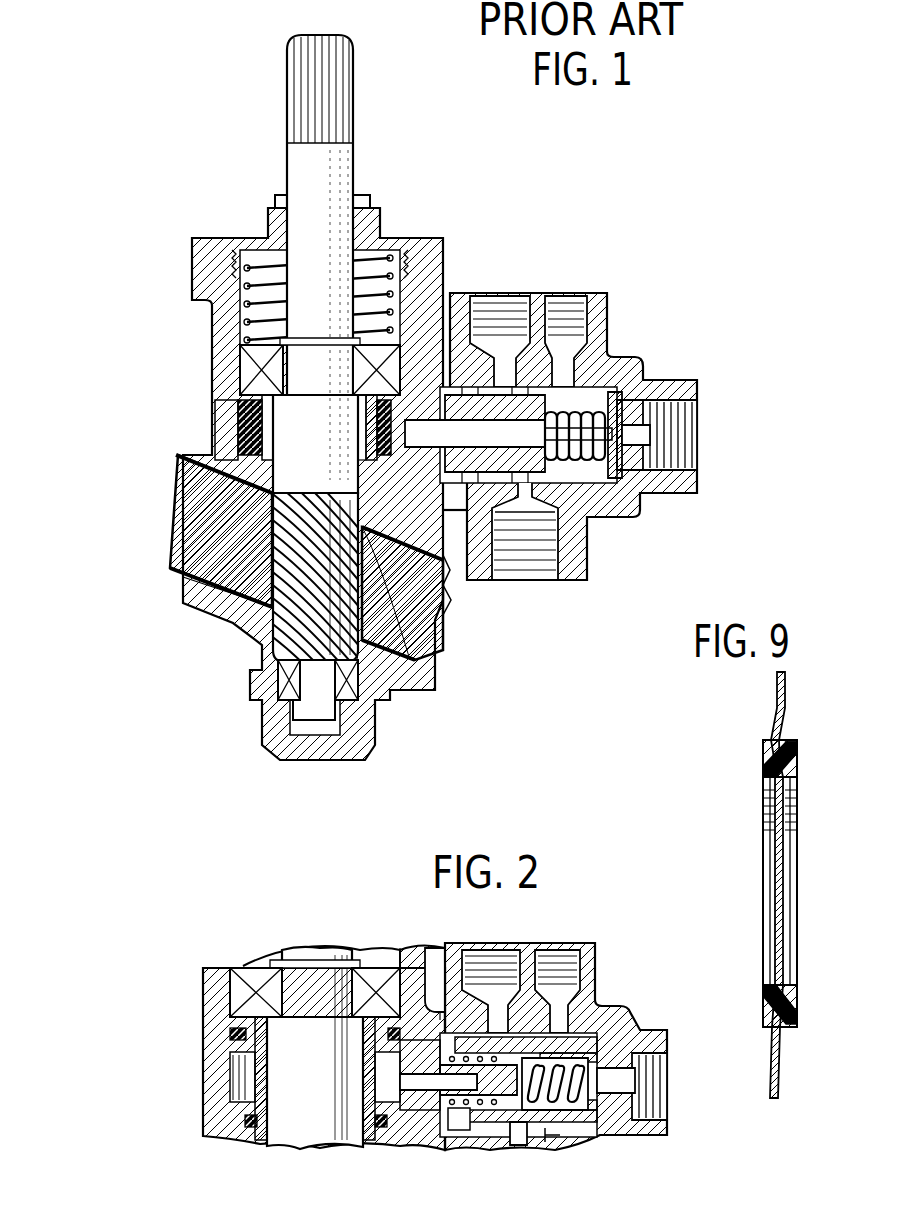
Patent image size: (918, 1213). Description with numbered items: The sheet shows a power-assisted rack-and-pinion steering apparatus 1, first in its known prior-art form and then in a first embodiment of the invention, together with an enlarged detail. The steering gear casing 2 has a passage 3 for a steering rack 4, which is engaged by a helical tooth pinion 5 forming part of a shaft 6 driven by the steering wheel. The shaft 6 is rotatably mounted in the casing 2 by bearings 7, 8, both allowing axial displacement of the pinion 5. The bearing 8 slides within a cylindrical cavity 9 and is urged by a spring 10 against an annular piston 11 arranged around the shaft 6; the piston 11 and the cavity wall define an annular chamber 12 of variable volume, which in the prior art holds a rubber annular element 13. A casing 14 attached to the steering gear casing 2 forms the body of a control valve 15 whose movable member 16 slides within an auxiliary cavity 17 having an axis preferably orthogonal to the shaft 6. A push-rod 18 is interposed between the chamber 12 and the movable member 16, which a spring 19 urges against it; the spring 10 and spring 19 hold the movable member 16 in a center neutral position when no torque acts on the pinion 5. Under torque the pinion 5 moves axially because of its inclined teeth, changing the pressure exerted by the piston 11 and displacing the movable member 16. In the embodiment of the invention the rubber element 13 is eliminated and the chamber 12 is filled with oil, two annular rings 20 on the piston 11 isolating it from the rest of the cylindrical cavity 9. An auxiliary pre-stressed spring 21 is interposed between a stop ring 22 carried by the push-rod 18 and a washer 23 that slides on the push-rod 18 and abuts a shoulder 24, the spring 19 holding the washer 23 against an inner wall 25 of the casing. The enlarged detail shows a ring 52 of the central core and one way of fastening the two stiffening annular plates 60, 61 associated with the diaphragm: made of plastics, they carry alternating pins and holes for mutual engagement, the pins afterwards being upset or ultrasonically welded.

In FIG. 1, the power-assisted rack-and-pinion steering apparatus 1 is at (512, 278).
In FIG. 2, the power-assisted rack-and-pinion steering apparatus 1 is at (196, 1036).
In FIG. 1, the steering gear casing 2 is at (200, 245).
In FIG. 2, the steering gear casing 2 is at (208, 982).
In FIG. 1, the passage 3 is at (420, 570).
In FIG. 1, the steering rack 4 is at (182, 563).
In FIG. 1, the rack-engaging helical tooth pinion 5 is at (300, 605).
In FIG. 1, the shaft 6 is at (330, 172).
In FIG. 2, the shaft 6 is at (300, 950).
In FIG. 1, the bearing 7 is at (278, 676).
In FIG. 1, the bearing 8 is at (248, 368).
In FIG. 2, the bearing 8 is at (248, 978).
In FIG. 1, the cylindrical cavity 9 is at (252, 298).
In FIG. 2, the cylindrical cavity 9 is at (388, 950).
In FIG. 1, the spring 10 is at (405, 300).
In FIG. 1, the annular piston 11 is at (240, 448).
In FIG. 2, the annular piston 11 is at (248, 1080).
In FIG. 1, the annular chamber 12 is at (245, 412).
In FIG. 2, the annular chamber 12 is at (248, 1118).
In FIG. 1, the rubber annular element 13 is at (395, 600).
In FIG. 1, the casing 14 is at (600, 330).
In FIG. 2, the casing 14 is at (590, 955).
In FIG. 1, the control valve 15 is at (551, 483).
In FIG. 2, the control valve 15 is at (554, 1145).
In FIG. 1, the movable member 16 is at (525, 410).
In FIG. 2, the movable member 16 is at (590, 1050).
In FIG. 1, the auxiliary cavity 17 is at (525, 520).
In FIG. 2, the auxiliary cavity 17 is at (535, 1140).
In FIG. 1, the push-rod 18 is at (480, 578).
In FIG. 2, the push-rod 18 is at (412, 1125).
In FIG. 1, the spring 19 is at (633, 410).
In FIG. 2, the spring 19 is at (630, 1055).
In FIG. 2, the annular rings 20 is at (230, 1035).
In FIG. 2, the auxiliary pre-stressed spring 21 is at (485, 1128).
In FIG. 2, the stop ring 22 is at (480, 1040).
In FIG. 2, the washer 23 is at (425, 965).
In FIG. 2, the shoulder 24 is at (452, 1130).
In FIG. 2, the inner wall 25 is at (442, 1060).
In FIG. 9, the ring 52 is at (777, 700).
In FIG. 9, the auxiliary washer 60 is at (763, 750).
In FIG. 9, the auxiliary washer 61 is at (790, 745).